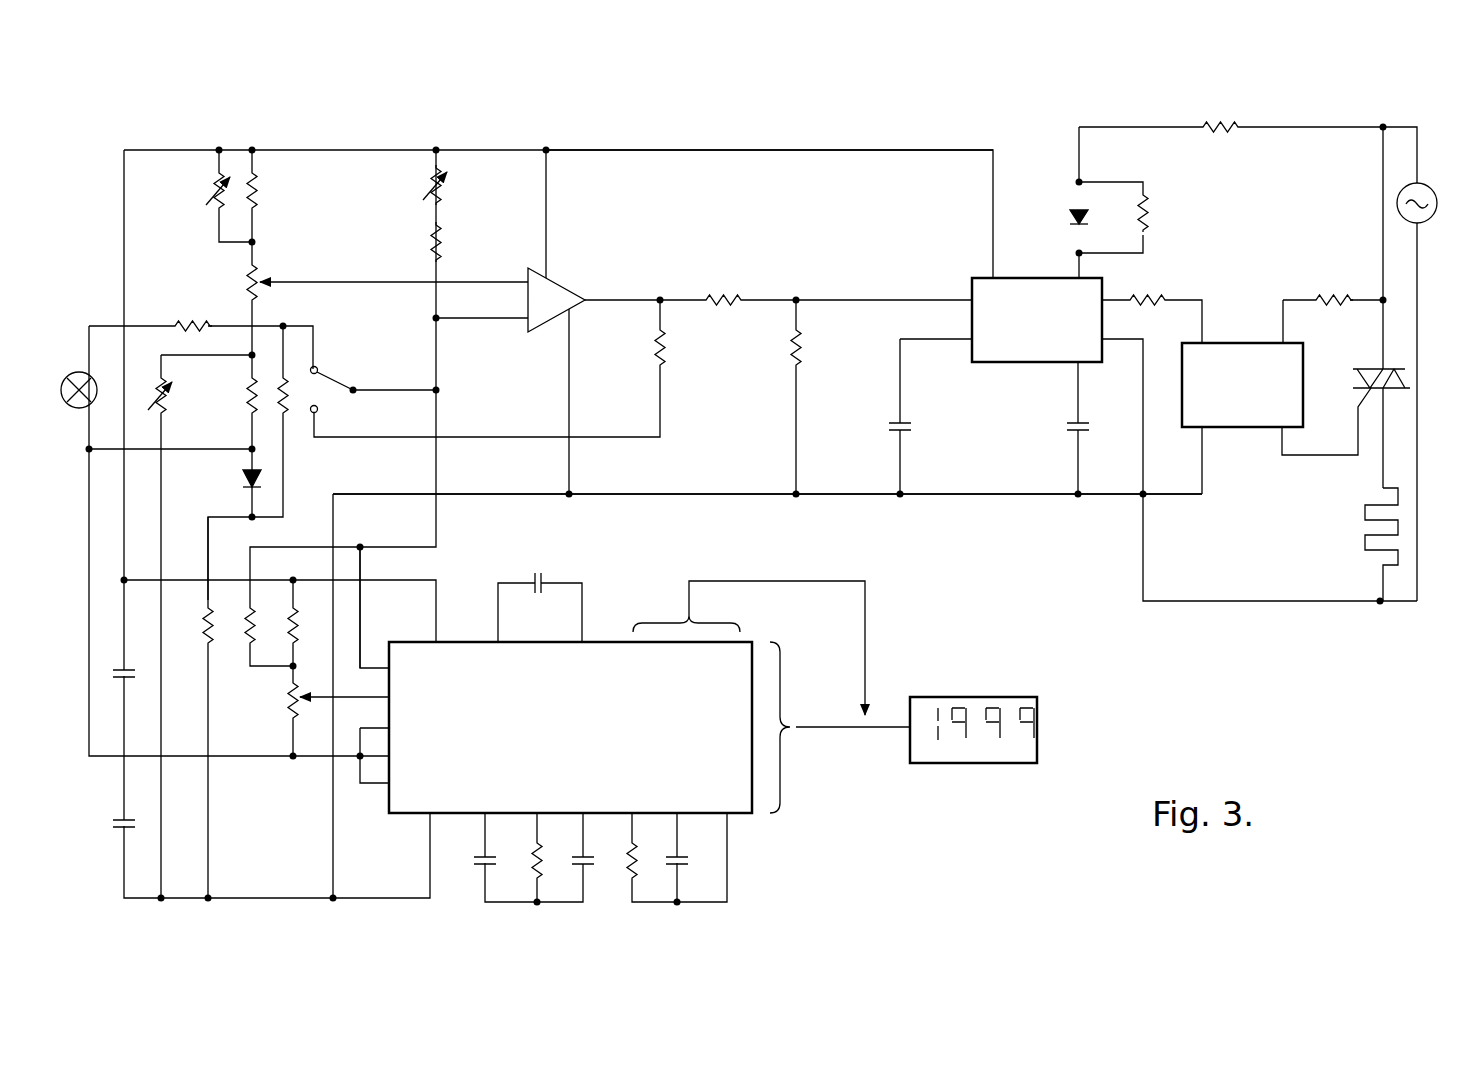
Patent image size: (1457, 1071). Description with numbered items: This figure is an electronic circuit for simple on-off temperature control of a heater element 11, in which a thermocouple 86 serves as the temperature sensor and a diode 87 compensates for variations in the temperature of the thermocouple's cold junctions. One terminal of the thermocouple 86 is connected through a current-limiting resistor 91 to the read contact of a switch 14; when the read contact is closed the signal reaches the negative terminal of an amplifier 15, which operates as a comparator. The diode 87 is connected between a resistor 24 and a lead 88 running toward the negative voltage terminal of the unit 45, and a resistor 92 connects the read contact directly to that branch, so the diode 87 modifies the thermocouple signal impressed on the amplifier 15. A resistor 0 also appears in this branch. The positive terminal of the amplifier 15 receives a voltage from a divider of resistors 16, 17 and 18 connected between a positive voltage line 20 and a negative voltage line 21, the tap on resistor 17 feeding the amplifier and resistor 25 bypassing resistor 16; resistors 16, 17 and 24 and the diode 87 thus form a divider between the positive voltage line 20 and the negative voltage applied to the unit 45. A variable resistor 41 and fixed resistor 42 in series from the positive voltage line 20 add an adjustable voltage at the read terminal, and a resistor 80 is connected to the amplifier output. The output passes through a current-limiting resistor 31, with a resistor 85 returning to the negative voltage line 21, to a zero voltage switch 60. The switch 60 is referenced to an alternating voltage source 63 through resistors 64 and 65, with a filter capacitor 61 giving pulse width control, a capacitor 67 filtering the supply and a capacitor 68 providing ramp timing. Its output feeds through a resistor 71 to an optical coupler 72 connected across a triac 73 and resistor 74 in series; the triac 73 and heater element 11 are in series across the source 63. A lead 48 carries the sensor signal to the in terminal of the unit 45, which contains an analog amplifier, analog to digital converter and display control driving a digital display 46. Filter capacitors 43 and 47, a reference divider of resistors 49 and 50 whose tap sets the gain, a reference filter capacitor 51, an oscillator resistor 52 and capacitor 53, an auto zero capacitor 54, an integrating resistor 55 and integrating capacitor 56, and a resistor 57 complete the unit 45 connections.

The resistor 0 is at (199, 631).
The heater element 11 is at (1365, 512).
The switch 14 is at (340, 399).
The amplifier 15 is at (564, 287).
The resistor 16 is at (260, 195).
The resistor 17 is at (248, 277).
The resistor 18 is at (171, 404).
The positive voltage line 20 is at (690, 148).
The negative voltage line 21 is at (738, 495).
The resistor 24 is at (246, 413).
The resistor 25 is at (215, 197).
The current-limiting resistor 31 is at (722, 290).
The variable resistor 41 is at (429, 183).
The fixed resistor 42 is at (433, 254).
The capacitor 43 is at (128, 670).
The unit 45 is at (450, 640).
The digital display 46 is at (1005, 697).
The capacitor 47 is at (118, 819).
The lead 48 is at (362, 563).
The resistor 49 is at (298, 622).
The resistor 50 is at (286, 704).
The capacitor 51 is at (542, 580).
The resistor 52 is at (642, 866).
The capacitor 53 is at (685, 866).
The auto zero capacitor 54 is at (478, 855).
The resistor 55 is at (531, 859).
The integrating capacitor 56 is at (587, 868).
The resistor 57 is at (248, 641).
The zero voltage switch 60 is at (1103, 279).
The filter capacitor 61 is at (1073, 212).
The alternating voltage source 63 is at (1397, 203).
The resistor 64 is at (1231, 125).
The resistor 65 is at (1157, 217).
The capacitor 67 is at (1070, 422).
The capacitor 68 is at (916, 425).
The resistor 71 is at (1150, 305).
The optical coupler 72 is at (1233, 343).
The triac 73 is at (1362, 369).
The resistor 74 is at (1331, 298).
The resistor 80 is at (670, 355).
The resistor 85 is at (808, 351).
The thermocouple 86 is at (81, 409).
The diode 87 is at (244, 479).
The lead 88 is at (207, 545).
The resistor 91 is at (179, 322).
The resistor 92 is at (290, 378).